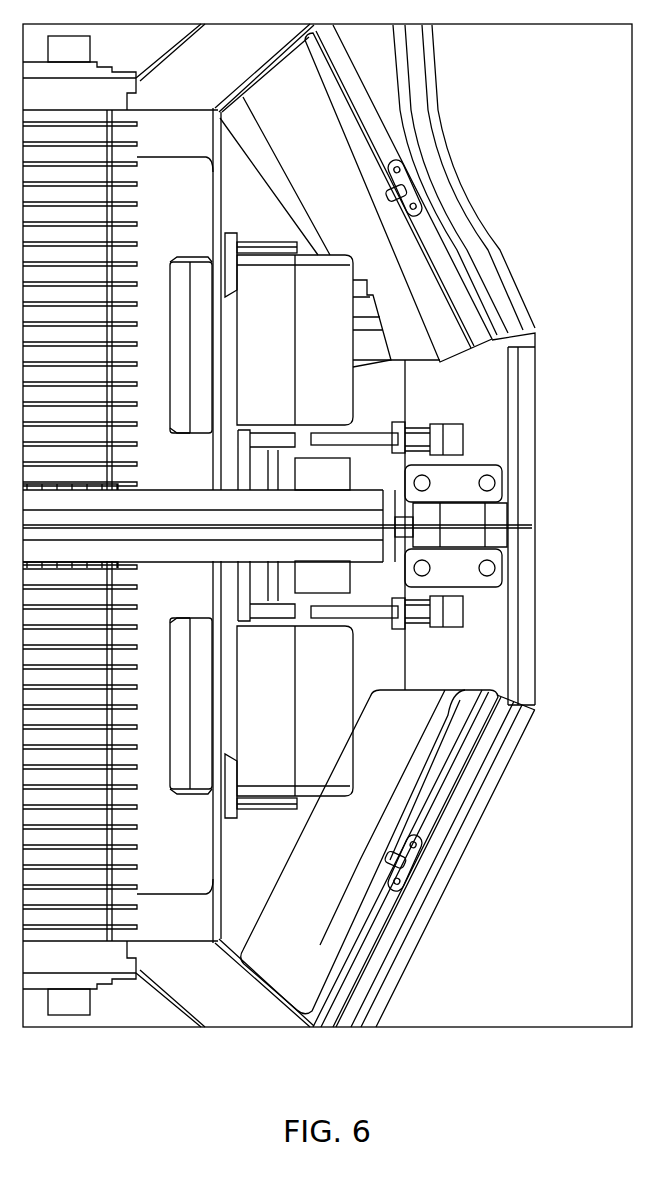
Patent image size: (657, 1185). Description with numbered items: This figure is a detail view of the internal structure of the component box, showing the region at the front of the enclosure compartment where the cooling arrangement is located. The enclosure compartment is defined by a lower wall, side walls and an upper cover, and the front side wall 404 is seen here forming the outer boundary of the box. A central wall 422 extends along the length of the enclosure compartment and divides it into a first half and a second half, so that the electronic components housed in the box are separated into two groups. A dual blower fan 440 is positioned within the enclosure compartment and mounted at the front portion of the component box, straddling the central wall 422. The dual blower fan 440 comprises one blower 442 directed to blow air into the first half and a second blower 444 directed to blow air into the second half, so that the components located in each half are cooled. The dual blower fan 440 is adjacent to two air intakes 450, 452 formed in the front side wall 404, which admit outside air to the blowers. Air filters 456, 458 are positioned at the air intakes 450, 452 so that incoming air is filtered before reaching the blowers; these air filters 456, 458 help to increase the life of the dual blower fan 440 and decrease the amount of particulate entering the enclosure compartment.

The front side wall 404 is at (500, 784).
The central wall 422 is at (372, 520).
The dual blower fan 440 is at (547, 403).
The blower 442 is at (335, 360).
The second blower 444 is at (335, 690).
The air intake 450 is at (473, 839).
The air intake 452 is at (475, 216).
The air filter 456 is at (330, 943).
The air filter 458 is at (338, 127).